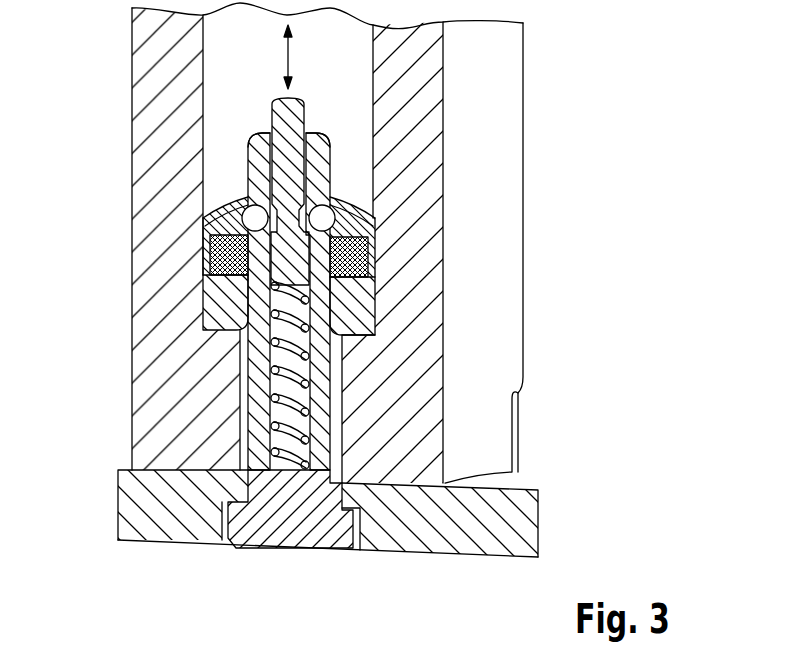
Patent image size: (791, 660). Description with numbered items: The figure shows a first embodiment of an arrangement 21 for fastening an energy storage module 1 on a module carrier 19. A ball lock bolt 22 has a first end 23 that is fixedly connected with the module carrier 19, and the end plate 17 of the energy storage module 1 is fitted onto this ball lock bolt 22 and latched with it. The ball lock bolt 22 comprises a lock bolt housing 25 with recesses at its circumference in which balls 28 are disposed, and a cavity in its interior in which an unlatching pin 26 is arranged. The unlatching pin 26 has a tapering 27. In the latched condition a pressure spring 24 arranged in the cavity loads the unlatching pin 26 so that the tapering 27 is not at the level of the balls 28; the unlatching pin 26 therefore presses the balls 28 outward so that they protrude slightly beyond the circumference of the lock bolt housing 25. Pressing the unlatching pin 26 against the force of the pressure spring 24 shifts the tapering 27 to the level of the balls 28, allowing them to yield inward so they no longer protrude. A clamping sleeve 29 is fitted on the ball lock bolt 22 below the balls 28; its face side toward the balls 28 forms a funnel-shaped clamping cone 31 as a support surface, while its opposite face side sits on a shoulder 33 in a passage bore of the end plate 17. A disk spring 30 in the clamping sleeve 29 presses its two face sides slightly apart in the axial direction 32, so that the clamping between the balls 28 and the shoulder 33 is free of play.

The energy storage module 1 is at (568, 56).
The end plate 17 is at (402, 118).
The module carrier 19 is at (438, 545).
The arrangement 21 is at (542, 331).
The ball lock bolt 22 is at (280, 562).
The first end 23 is at (292, 537).
The pressure spring 24 is at (273, 410).
The lock bolt housing 25 is at (256, 376).
The unlatching pin 26 is at (270, 125).
The tapering 27 is at (260, 189).
The balls 28 is at (333, 218).
The clamping sleeve 29 is at (218, 298).
The disk spring 30 is at (214, 248).
The clamping cone 31 is at (242, 214).
The axial direction 32 is at (285, 58).
The shoulder 33 is at (232, 328).